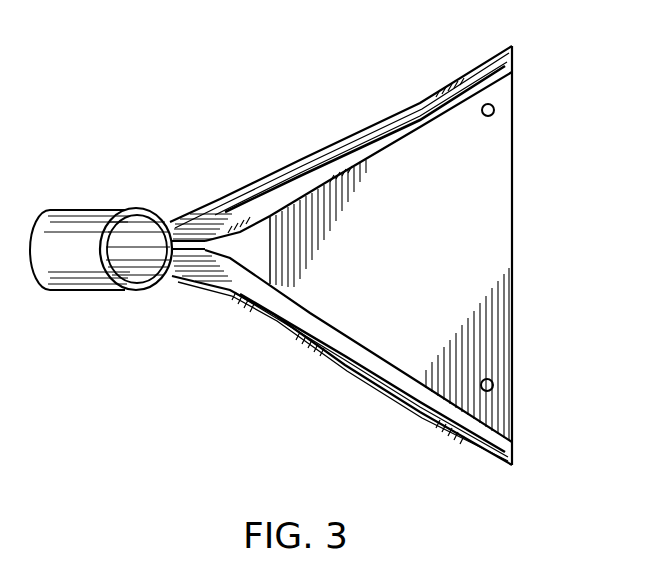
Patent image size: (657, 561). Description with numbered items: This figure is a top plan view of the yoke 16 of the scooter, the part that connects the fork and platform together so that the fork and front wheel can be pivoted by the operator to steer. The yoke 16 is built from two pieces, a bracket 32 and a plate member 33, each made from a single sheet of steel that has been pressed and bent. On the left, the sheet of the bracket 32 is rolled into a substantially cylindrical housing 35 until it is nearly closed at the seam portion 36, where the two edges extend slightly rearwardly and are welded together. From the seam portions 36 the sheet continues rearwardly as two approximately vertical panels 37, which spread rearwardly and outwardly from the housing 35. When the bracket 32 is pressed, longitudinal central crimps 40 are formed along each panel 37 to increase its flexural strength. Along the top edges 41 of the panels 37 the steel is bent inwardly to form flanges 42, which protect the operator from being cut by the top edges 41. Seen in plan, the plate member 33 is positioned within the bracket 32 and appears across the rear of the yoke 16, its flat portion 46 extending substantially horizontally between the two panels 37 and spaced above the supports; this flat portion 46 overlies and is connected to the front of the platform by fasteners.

The yoke 16 is at (248, 184).
The bracket 32 is at (332, 365).
The plate member 33 is at (514, 262).
The cylindrical housing 35 is at (100, 296).
The seam portion 36 is at (200, 215).
The vertical panel 37 is at (321, 156).
The longitudinal central crimp 40 is at (335, 143).
The top edge 41 is at (473, 70).
The flange 42 is at (410, 132).
The flat portion 46 is at (514, 147).